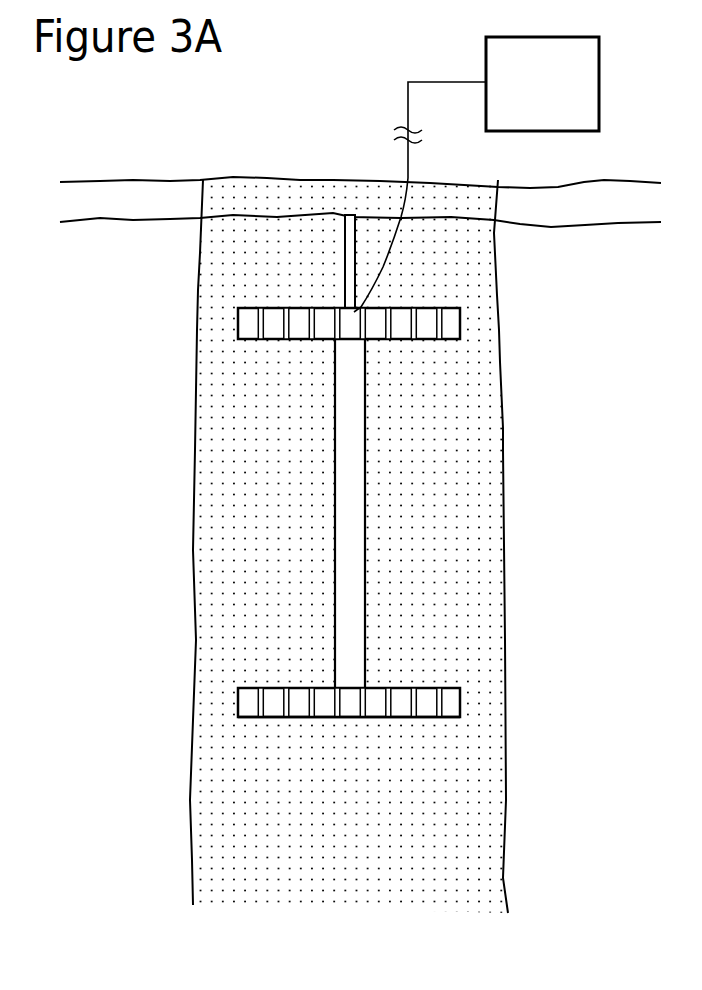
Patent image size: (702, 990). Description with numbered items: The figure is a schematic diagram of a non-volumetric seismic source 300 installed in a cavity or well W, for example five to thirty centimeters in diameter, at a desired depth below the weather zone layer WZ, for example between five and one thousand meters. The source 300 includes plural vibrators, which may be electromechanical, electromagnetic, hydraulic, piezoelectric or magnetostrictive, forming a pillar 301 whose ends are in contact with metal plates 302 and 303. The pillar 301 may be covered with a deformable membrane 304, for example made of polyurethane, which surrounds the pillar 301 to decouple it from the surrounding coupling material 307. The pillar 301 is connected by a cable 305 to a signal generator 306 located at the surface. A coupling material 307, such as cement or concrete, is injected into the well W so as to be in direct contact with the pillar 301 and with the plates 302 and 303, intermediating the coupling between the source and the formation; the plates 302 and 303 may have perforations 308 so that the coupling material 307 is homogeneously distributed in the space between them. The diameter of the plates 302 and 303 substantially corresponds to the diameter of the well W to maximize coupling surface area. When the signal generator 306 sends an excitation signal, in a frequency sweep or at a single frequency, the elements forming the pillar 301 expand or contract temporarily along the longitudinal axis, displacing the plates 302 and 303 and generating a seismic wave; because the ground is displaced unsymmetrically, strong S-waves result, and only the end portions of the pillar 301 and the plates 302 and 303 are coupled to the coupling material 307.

The non-volumetric source 300 is at (357, 540).
The pillar 301 is at (356, 442).
The plate 302 is at (291, 294).
The plate 303 is at (295, 732).
The deformable membrane 304 is at (357, 513).
The cable 305 is at (406, 163).
The signal generator 306 is at (563, 99).
The coupling material 307 is at (372, 877).
The perforations 308 is at (311, 712).
The weather zone layer WZ is at (609, 207).
The well W is at (507, 878).